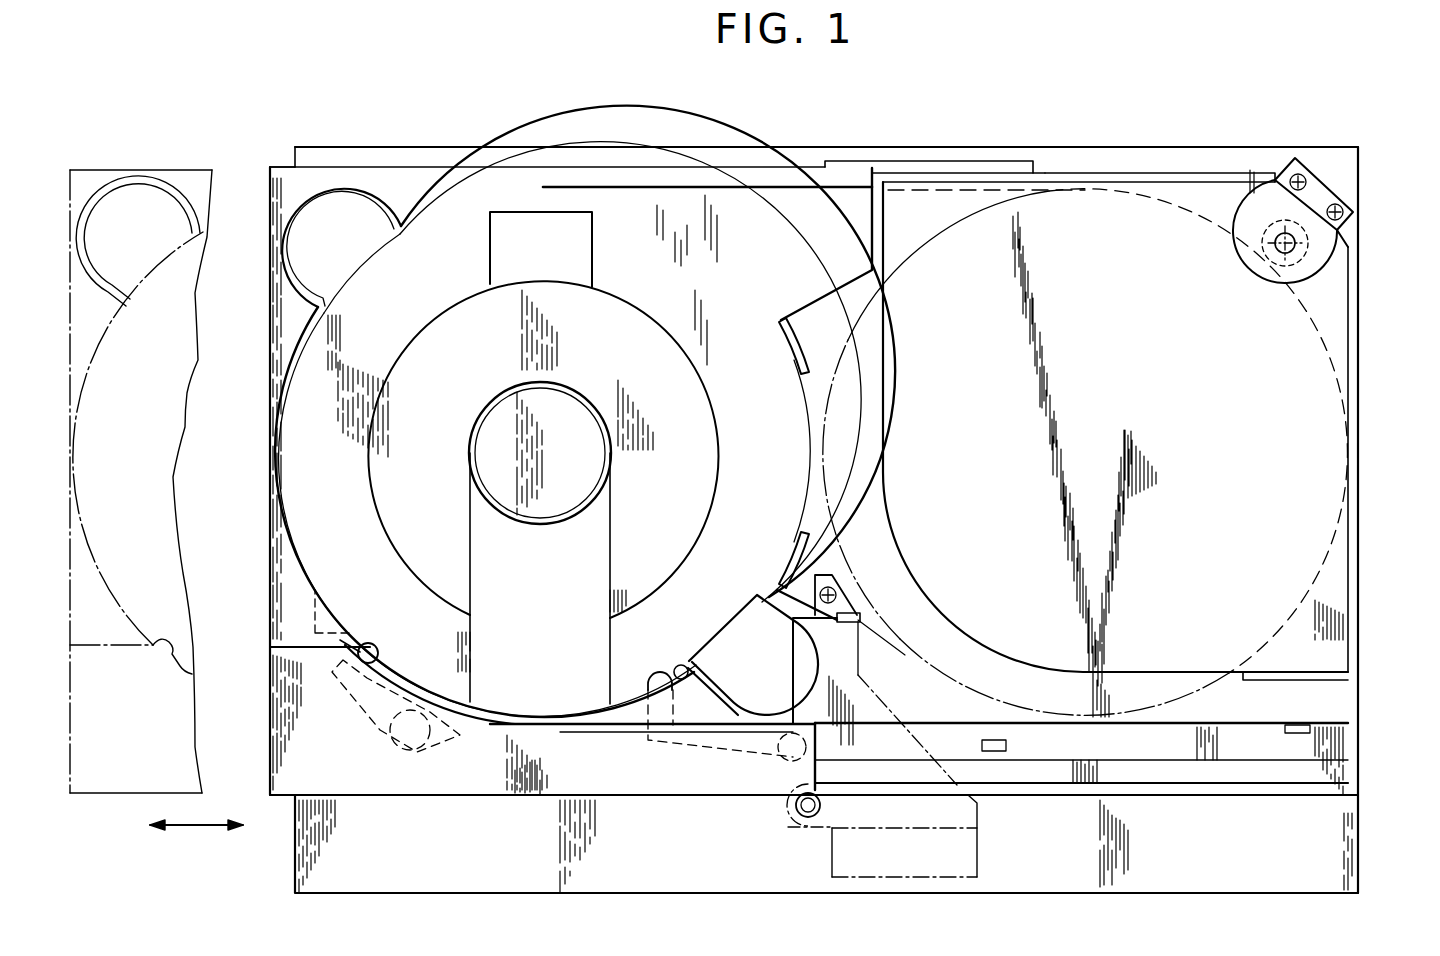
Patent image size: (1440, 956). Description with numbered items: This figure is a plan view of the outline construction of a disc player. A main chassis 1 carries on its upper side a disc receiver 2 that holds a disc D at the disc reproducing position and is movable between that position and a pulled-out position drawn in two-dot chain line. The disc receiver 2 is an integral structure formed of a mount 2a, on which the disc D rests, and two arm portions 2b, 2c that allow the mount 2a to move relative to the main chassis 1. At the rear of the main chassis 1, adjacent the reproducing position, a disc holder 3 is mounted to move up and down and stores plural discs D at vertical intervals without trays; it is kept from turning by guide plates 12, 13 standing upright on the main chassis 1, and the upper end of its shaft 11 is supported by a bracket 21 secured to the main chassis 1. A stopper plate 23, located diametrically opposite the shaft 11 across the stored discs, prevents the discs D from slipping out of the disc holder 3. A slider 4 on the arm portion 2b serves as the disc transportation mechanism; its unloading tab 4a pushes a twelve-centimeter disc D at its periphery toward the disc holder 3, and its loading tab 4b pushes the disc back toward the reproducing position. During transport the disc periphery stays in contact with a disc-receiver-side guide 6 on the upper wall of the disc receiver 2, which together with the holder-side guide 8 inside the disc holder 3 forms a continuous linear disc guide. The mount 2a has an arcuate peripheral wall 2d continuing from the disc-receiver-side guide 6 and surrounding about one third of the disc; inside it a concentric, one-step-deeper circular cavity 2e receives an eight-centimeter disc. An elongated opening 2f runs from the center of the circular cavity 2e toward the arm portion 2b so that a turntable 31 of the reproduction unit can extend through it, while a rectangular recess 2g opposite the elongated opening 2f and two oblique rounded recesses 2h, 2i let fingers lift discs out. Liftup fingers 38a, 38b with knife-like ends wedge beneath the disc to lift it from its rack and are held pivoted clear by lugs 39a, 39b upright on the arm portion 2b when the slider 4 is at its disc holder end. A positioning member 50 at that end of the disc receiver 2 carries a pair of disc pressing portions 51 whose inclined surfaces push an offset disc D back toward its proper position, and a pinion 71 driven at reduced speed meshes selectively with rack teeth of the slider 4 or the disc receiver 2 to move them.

The main chassis 1 is at (592, 146).
The disc receiver 2 is at (428, 166).
The mount 2a is at (657, 237).
The arm portion 2b is at (1170, 798).
The arm portion 2c is at (955, 160).
The arcuate peripheral wall 2d is at (290, 393).
The circular cavity 2e is at (462, 348).
The elongated opening 2f is at (598, 543).
The rectangular recess 2g is at (530, 232).
The rounded recess 2h is at (330, 208).
The rounded recess 2i is at (736, 660).
The disc holder 3 is at (1222, 195).
The slider 4 is at (538, 798).
The unloading tab 4a is at (352, 640).
The loading tab 4b is at (678, 668).
The disc-receiver-side guide 6 is at (768, 205).
The holder-side guide 8 is at (957, 190).
The shaft 11 is at (1284, 246).
The guide plate 12 is at (1145, 171).
The guide plate 13 is at (1360, 583).
The bracket 21 is at (1318, 172).
The stopper plate 23 is at (858, 615).
The turntable 31 is at (543, 525).
The liftup finger 38a is at (372, 645).
The liftup finger 38b is at (655, 683).
The lug 39a is at (996, 752).
The lug 39b is at (1298, 735).
The positioning member 50 is at (819, 410).
The disc pressing portion 51 is at (790, 343).
The pinion 71 is at (795, 812).
The disc D is at (1190, 690).